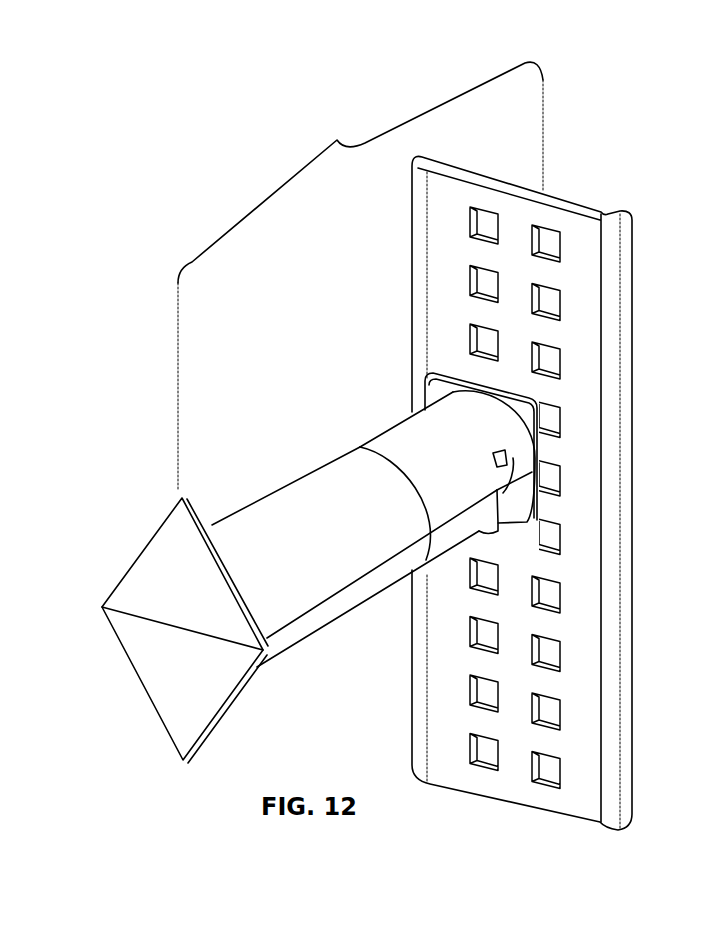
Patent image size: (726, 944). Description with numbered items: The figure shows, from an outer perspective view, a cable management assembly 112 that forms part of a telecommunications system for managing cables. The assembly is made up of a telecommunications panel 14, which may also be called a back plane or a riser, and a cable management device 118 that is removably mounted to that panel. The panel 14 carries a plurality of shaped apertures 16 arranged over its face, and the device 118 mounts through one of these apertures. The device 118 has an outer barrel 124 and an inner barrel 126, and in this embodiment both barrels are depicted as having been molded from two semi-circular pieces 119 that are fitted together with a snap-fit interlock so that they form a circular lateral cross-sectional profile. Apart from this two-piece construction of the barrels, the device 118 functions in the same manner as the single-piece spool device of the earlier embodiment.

The telecommunications panel 14 is at (633, 633).
The shaped apertures 16 is at (547, 764).
The cable management assembly 112 is at (342, 149).
The cable management device 118 is at (333, 648).
The semi-circular pieces 119 is at (512, 442).
The outer barrel 124 is at (270, 503).
The inner barrel 126 is at (397, 435).